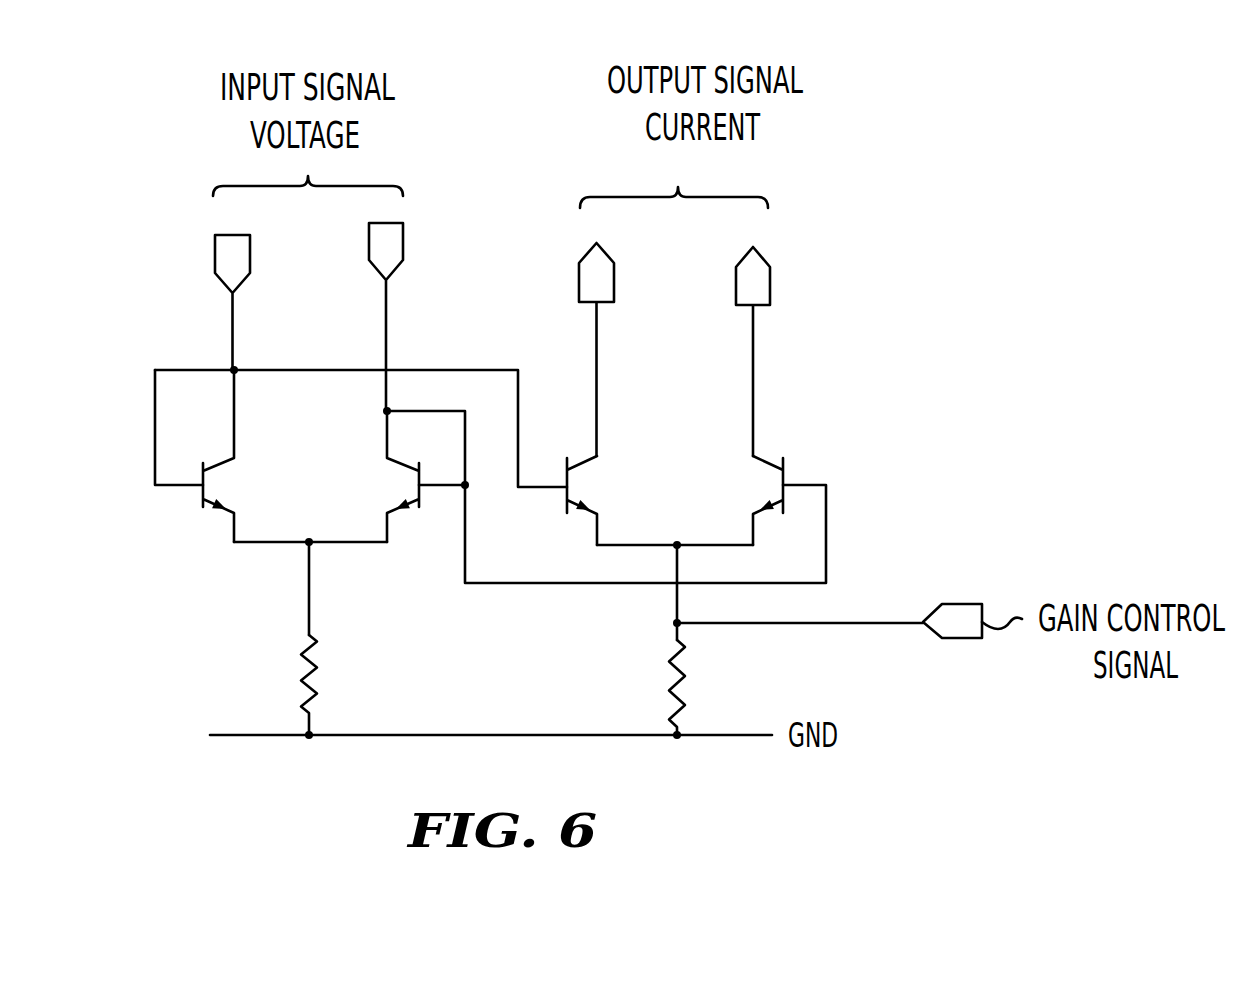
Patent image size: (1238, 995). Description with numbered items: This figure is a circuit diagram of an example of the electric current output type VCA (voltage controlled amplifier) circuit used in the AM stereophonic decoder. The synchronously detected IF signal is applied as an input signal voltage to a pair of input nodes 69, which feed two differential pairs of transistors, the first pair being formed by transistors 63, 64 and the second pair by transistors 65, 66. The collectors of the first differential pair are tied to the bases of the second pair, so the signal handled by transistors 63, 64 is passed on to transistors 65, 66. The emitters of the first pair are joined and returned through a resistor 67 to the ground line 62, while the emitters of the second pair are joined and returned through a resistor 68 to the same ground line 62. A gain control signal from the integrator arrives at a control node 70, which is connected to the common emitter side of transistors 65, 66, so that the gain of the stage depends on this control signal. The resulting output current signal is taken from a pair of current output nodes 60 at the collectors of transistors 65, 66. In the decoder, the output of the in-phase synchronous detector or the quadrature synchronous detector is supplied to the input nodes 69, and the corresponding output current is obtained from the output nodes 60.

The current output node 60 is at (607, 265).
The ground line 62 is at (721, 736).
The transistor 63 is at (222, 510).
The transistor 64 is at (393, 518).
The transistor 65 is at (600, 483).
The transistor 66 is at (785, 467).
The input stage emitter resistor 67 is at (316, 672).
The output stage emitter resistor 68 is at (688, 677).
The input node 69 is at (380, 223).
The control node 70 is at (968, 603).